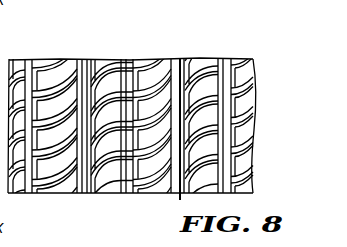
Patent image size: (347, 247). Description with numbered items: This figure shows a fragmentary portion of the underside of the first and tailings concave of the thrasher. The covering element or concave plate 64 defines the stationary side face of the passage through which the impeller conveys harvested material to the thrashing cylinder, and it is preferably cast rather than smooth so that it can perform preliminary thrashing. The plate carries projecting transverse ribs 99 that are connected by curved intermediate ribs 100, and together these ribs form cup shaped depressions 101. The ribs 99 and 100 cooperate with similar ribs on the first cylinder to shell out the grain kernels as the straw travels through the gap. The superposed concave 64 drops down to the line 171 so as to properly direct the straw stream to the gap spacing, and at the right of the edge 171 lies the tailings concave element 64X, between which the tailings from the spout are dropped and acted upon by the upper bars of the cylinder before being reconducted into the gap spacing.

The concave plate 64 is at (130, 132).
The tailings concave element 64X is at (247, 124).
The projecting transverse ribs 99 is at (80, 60).
The curved intermediate ribs 100 is at (101, 78).
The cup shaped depressions 101 is at (156, 87).
The line 171 is at (181, 197).